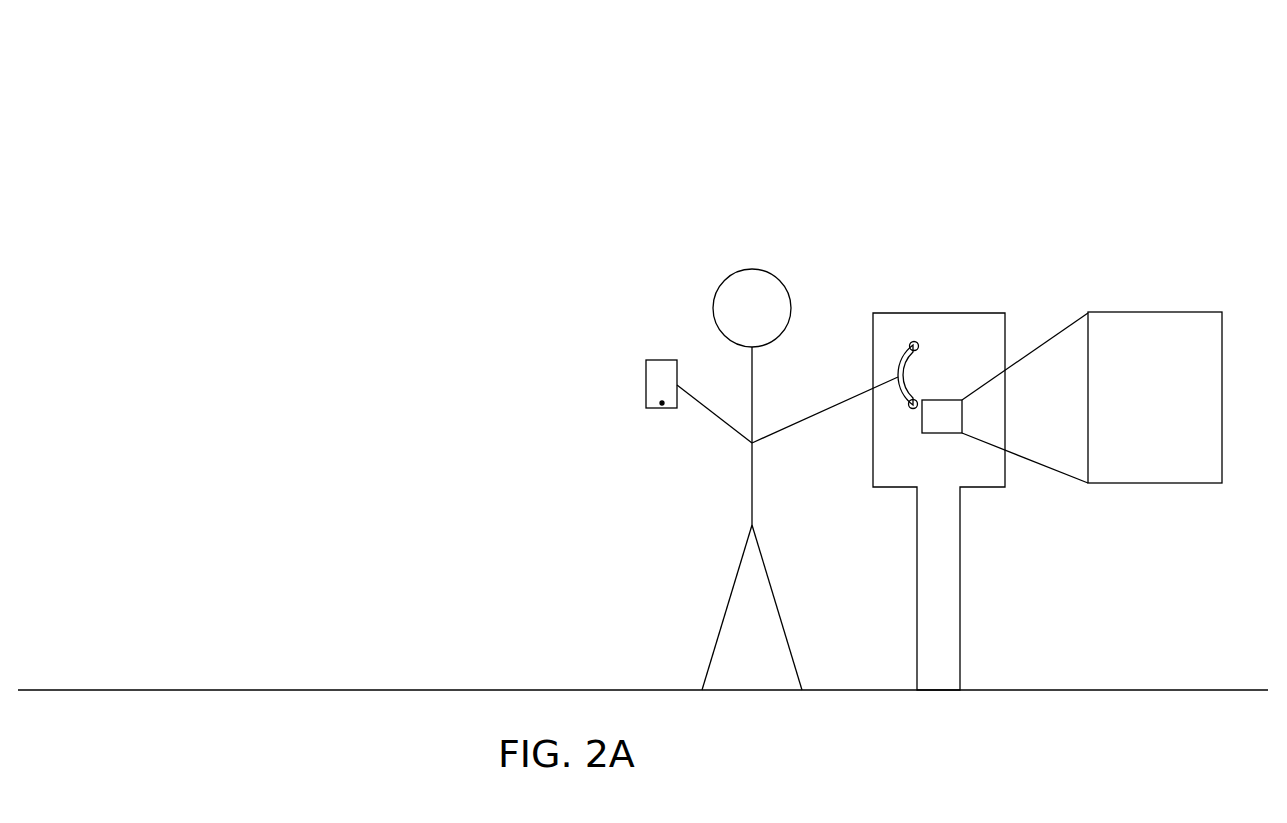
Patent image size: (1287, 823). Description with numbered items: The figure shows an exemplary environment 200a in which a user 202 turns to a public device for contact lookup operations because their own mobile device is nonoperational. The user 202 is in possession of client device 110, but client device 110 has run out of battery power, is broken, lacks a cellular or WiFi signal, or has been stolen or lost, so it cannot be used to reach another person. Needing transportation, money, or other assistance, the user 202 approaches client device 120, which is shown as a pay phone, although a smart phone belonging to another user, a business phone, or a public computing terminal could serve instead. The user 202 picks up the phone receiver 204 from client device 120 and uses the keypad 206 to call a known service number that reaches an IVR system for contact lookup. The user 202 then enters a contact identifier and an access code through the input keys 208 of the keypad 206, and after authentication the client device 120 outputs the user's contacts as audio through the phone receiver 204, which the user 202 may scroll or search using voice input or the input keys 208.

The environment 200a is at (1088, 40).
The user 202 is at (752, 269).
The client device 110 is at (652, 348).
The client device 120 is at (938, 312).
The phone receiver 204 is at (903, 410).
The keypad 206 is at (942, 397).
The input keys 208 is at (1198, 318).